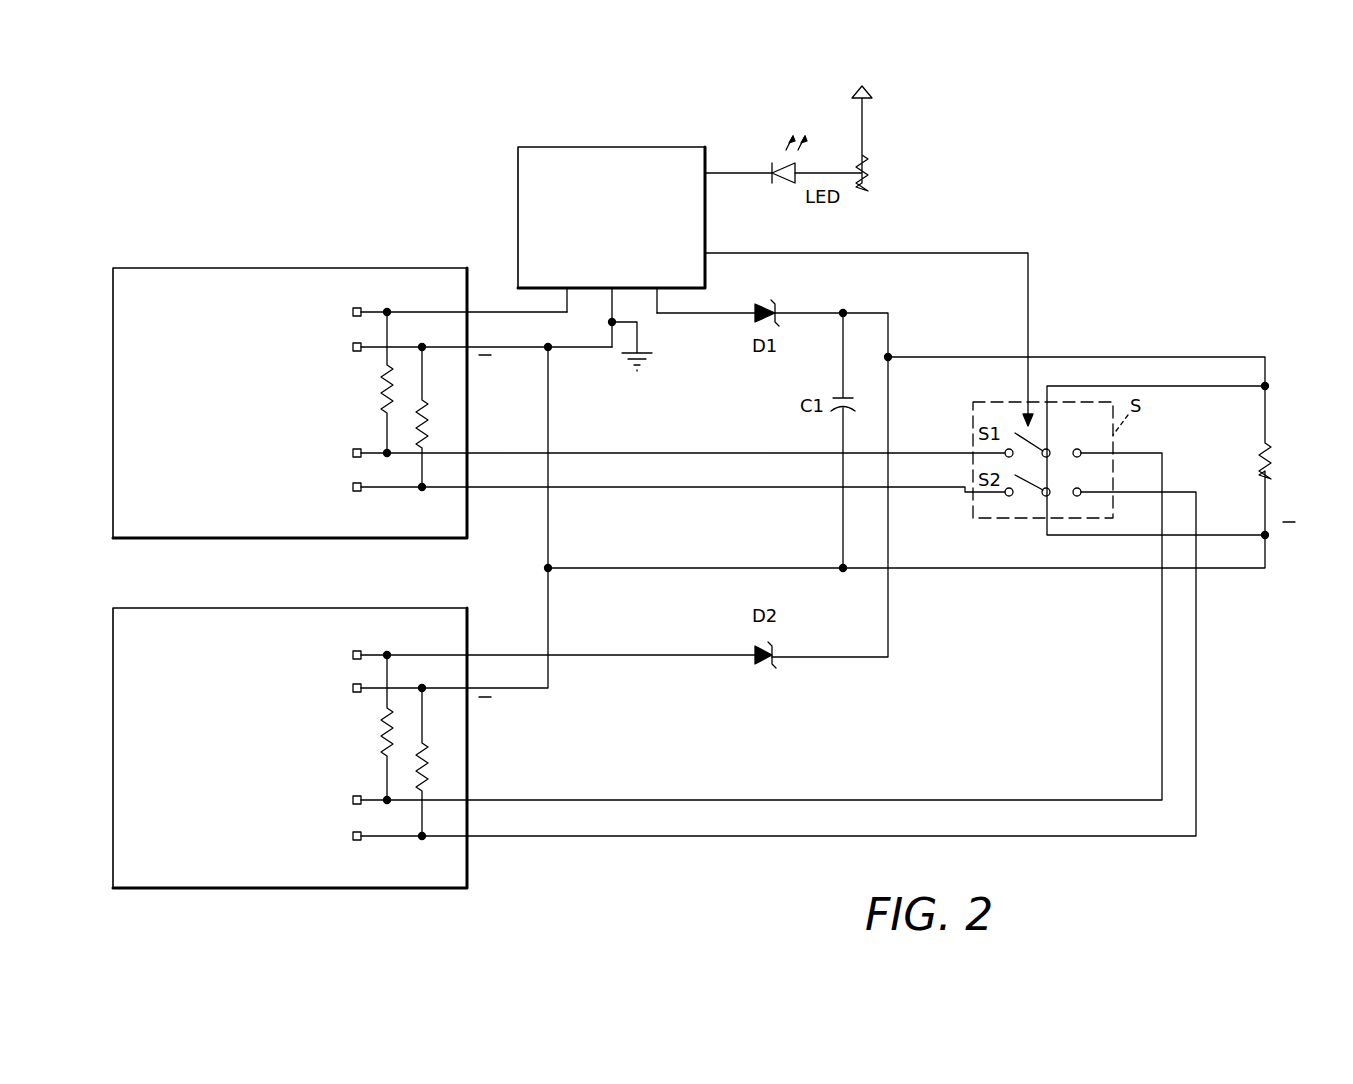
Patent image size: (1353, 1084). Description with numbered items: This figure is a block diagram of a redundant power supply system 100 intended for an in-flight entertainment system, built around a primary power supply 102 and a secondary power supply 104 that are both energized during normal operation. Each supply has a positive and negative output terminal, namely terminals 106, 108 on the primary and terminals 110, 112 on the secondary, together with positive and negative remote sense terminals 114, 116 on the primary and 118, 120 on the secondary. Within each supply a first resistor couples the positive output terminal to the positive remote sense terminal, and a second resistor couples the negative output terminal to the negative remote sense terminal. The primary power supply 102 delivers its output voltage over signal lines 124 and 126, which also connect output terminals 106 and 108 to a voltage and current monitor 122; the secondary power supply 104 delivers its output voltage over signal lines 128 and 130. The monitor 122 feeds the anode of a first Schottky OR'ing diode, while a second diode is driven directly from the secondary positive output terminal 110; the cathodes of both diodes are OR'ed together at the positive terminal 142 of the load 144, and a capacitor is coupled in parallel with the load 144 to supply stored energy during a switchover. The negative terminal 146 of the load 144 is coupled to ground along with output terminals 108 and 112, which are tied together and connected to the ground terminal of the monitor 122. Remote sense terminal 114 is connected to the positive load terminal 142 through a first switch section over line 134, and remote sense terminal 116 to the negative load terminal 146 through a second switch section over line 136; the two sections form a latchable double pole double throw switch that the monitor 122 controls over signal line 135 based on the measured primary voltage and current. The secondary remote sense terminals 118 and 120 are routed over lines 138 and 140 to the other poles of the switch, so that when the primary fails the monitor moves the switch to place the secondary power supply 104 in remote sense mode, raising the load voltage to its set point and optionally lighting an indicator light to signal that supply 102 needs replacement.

The power supply system 100 is at (1178, 234).
The primary power supply 102 is at (240, 268).
The secondary power supply 104 is at (210, 608).
The positive output terminal 106 is at (356, 306).
The negative output terminal 108 is at (356, 353).
The positive output terminal 110 is at (356, 649).
The negative output terminal 112 is at (356, 694).
The positive remote sense terminal 114 is at (357, 447).
The negative remote sense terminal 116 is at (357, 493).
The positive remote sense terminal 118 is at (357, 794).
The negative remote sense terminal 120 is at (357, 842).
The monitor 122 is at (655, 147).
The signal line 124 is at (510, 311).
The signal line 126 is at (520, 349).
The signal line 128 is at (514, 653).
The signal line 130 is at (513, 690).
The primary +remote sense line 134 is at (521, 452).
The signal line 135 is at (975, 253).
The primary -remote sense line 136 is at (520, 489).
The secondary +remote sense line 138 is at (498, 799).
The secondary -remote sense line 140 is at (500, 837).
The positive terminal 142 is at (1268, 385).
The load 144 is at (1338, 489).
The negative terminal 146 is at (1268, 538).